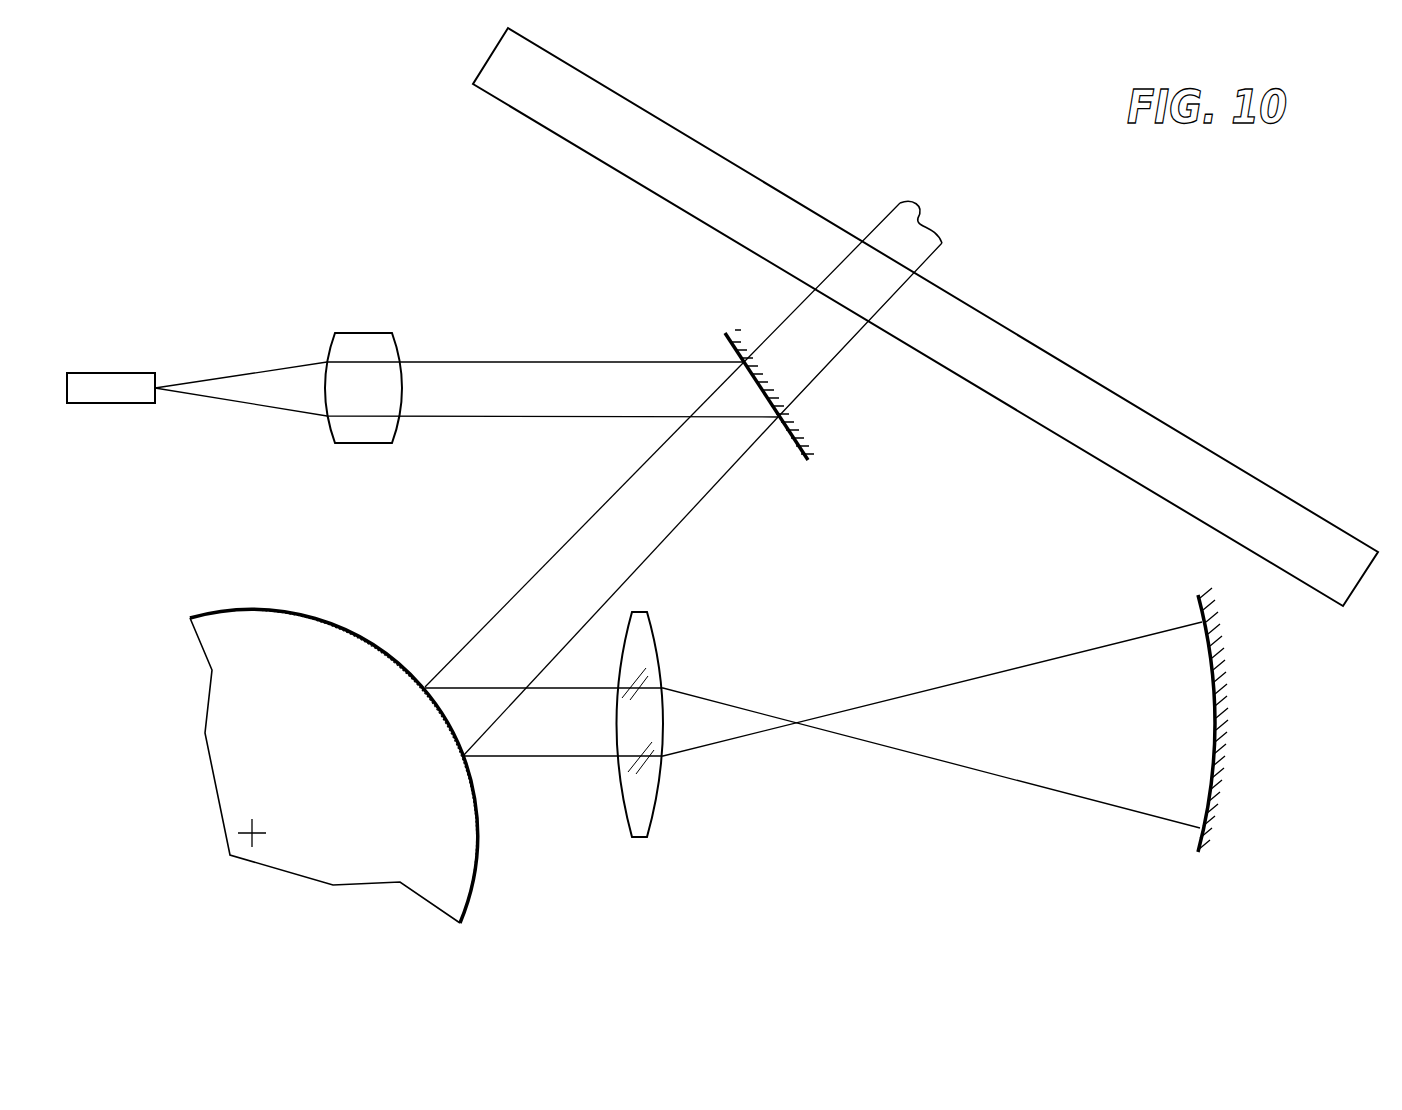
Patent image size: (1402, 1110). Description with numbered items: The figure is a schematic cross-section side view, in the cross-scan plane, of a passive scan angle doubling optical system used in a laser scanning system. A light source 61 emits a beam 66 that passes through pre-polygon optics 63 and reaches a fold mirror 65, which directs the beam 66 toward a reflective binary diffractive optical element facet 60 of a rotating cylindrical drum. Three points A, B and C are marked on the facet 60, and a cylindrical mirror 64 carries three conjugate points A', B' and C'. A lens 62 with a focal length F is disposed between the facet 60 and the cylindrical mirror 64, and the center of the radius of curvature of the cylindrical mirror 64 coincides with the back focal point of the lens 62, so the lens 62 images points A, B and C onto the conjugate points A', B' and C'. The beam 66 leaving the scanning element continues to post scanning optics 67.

The reflective binary diffractive optical element facet 60 is at (395, 660).
The light source 61 is at (112, 405).
The lens 62 is at (660, 810).
The pre-polygon optics 63 is at (396, 430).
The cylindrical mirror 64 is at (1196, 842).
The fold mirror 65 is at (792, 460).
The beam 66 is at (262, 408).
The post scanning optics 67 is at (1238, 467).